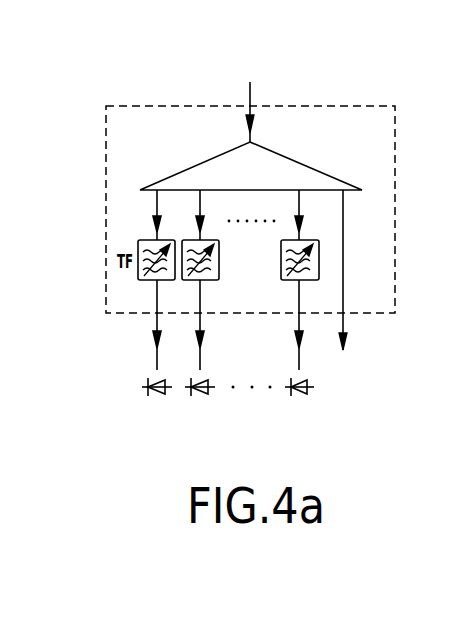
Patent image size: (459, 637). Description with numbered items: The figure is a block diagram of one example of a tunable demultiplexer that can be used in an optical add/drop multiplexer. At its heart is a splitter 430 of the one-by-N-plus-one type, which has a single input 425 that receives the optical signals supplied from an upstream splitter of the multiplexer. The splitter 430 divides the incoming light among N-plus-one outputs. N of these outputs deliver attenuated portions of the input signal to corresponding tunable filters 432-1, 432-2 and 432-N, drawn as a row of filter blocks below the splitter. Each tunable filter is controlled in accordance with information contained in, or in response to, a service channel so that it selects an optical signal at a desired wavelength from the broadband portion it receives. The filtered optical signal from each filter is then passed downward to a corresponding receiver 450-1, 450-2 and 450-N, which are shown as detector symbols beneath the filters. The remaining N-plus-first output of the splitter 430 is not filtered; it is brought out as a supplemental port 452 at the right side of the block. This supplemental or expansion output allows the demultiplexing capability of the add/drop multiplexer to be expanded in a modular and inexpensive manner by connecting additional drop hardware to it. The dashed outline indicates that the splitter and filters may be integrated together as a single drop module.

The input 425 is at (247, 100).
The 1×N+1 splitter 430 is at (157, 187).
The tunable filter 432-1 is at (150, 282).
The tunable filter 432-2 is at (206, 282).
The tunable filter 432-N is at (312, 282).
The receiver 450-1 is at (163, 395).
The receiver 450-2 is at (205, 395).
The receiver 450-N is at (302, 393).
The supplemental port 452 is at (345, 350).